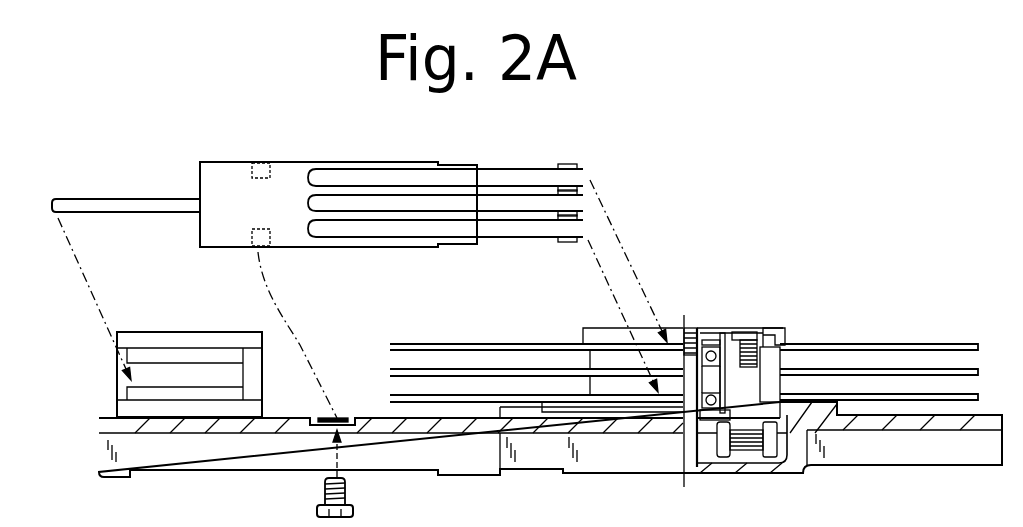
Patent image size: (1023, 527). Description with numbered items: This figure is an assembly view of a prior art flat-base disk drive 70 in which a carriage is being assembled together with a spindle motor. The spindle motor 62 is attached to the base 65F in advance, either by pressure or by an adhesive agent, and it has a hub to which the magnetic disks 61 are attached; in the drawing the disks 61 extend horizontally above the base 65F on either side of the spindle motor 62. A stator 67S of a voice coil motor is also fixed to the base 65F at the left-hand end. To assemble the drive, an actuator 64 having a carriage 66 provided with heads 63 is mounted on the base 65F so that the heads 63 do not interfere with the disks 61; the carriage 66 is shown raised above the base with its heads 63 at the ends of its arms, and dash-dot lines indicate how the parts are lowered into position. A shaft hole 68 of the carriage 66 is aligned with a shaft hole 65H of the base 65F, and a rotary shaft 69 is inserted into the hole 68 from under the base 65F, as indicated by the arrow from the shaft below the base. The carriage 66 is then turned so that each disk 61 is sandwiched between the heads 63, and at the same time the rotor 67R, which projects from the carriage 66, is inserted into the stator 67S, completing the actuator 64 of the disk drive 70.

The magnetic disks 61 is at (883, 343).
The spindle motor 62 is at (708, 320).
The heads 63 is at (563, 167).
The actuator 64 is at (100, 382).
The base 65F is at (977, 448).
The shaft hole 65H is at (345, 428).
The carriage 66 is at (290, 172).
The rotor 67R is at (118, 198).
The stator 67S is at (171, 334).
The shaft hole 68 is at (269, 253).
The rotary shaft 69 is at (325, 496).
The disk drive 70 is at (826, 252).